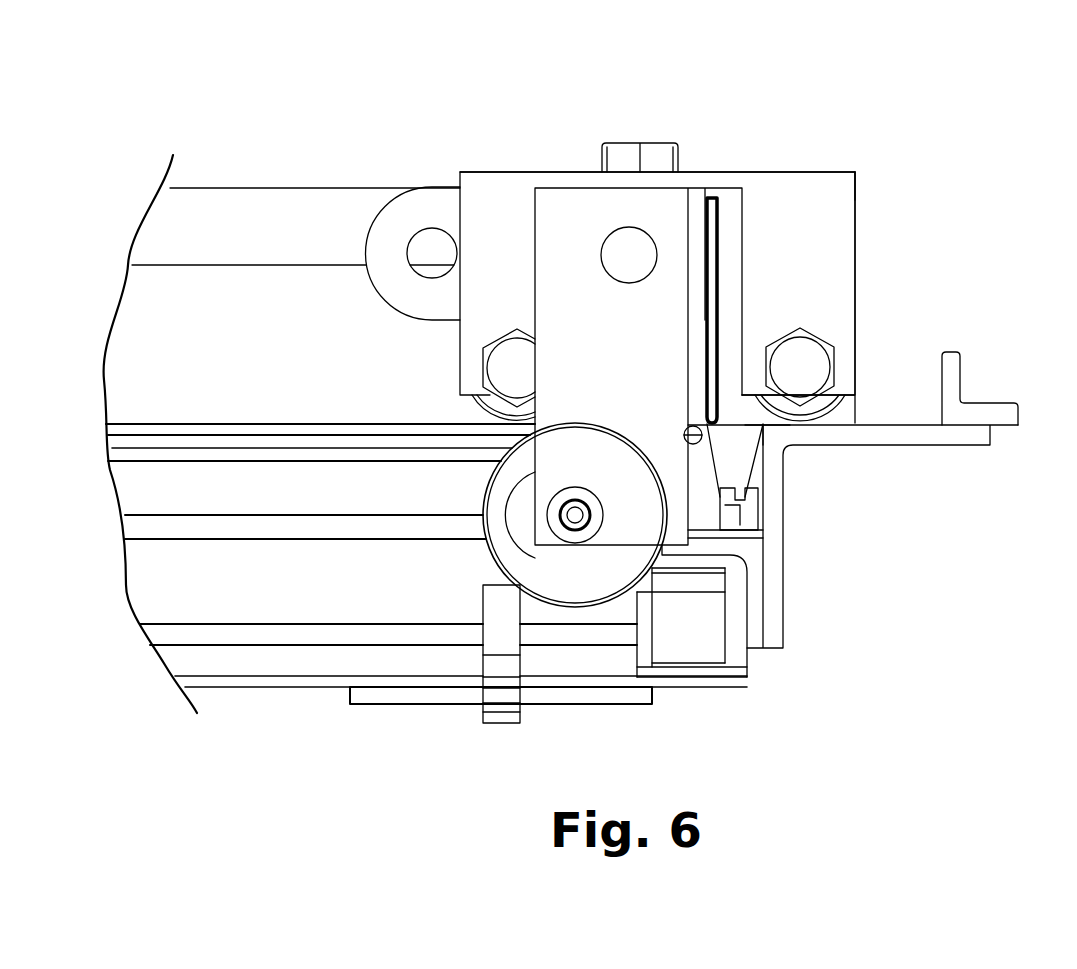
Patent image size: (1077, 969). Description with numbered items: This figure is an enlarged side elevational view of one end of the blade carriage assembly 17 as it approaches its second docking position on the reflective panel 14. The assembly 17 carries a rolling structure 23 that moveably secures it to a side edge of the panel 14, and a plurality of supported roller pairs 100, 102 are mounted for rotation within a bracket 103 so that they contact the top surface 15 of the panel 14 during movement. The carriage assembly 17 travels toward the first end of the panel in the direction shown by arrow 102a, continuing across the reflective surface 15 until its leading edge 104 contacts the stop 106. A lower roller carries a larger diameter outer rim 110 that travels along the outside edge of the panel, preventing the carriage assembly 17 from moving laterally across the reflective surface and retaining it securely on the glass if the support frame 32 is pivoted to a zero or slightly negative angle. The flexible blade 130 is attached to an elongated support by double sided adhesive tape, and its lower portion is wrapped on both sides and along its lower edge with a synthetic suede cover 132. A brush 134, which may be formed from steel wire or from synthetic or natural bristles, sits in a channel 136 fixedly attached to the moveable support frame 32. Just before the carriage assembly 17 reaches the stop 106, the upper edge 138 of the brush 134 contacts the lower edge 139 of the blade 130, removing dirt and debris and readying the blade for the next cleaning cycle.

The reflective panel 14 is at (213, 430).
The top surface of the reflective panel 15 is at (318, 430).
The blade carriage assembly 17 is at (665, 103).
The rolling structure 23 is at (660, 296).
The support frame 32 is at (305, 612).
The supported roller 100 is at (825, 410).
The supported roller 102 is at (490, 402).
The arrow indicating direction of movement 102a is at (805, 98).
The bracket 103 is at (765, 183).
The leading edge 104 is at (855, 330).
The stop 106 is at (956, 376).
The outer rim 110 is at (590, 587).
The flexible blade 130 is at (713, 318).
The synthetic suede cover 132 is at (762, 425).
The brush 134 is at (770, 445).
The channel 136 is at (740, 536).
The upper edge of the brush 138 is at (766, 432).
The lower edge of the blade 139 is at (704, 545).